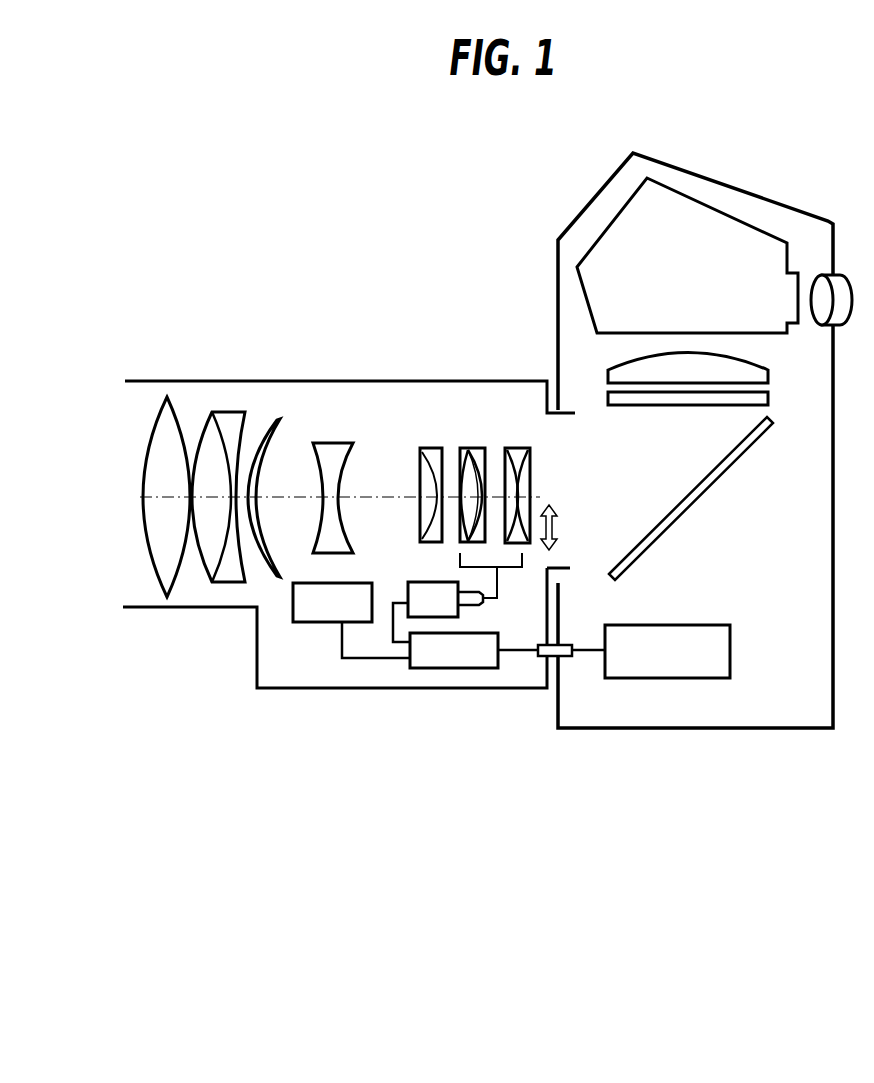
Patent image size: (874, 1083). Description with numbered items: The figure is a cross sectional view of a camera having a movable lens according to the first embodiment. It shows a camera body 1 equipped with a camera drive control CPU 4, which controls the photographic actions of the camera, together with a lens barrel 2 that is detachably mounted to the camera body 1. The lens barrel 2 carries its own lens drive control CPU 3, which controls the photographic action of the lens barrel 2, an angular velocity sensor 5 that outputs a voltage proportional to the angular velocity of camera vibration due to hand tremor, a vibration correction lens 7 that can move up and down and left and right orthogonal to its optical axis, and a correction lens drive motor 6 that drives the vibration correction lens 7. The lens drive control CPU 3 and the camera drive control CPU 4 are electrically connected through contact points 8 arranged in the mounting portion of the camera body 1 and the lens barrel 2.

The camera body 1 is at (738, 190).
The lens barrel 2 is at (215, 382).
The lens drive control CPU 3 is at (457, 670).
The camera drive control CPU 4 is at (735, 662).
The angular velocity sensor 5 is at (307, 624).
The correction lens drive motor 6 is at (408, 616).
The vibration correction lens 7 is at (472, 448).
The contact points 8 is at (575, 656).